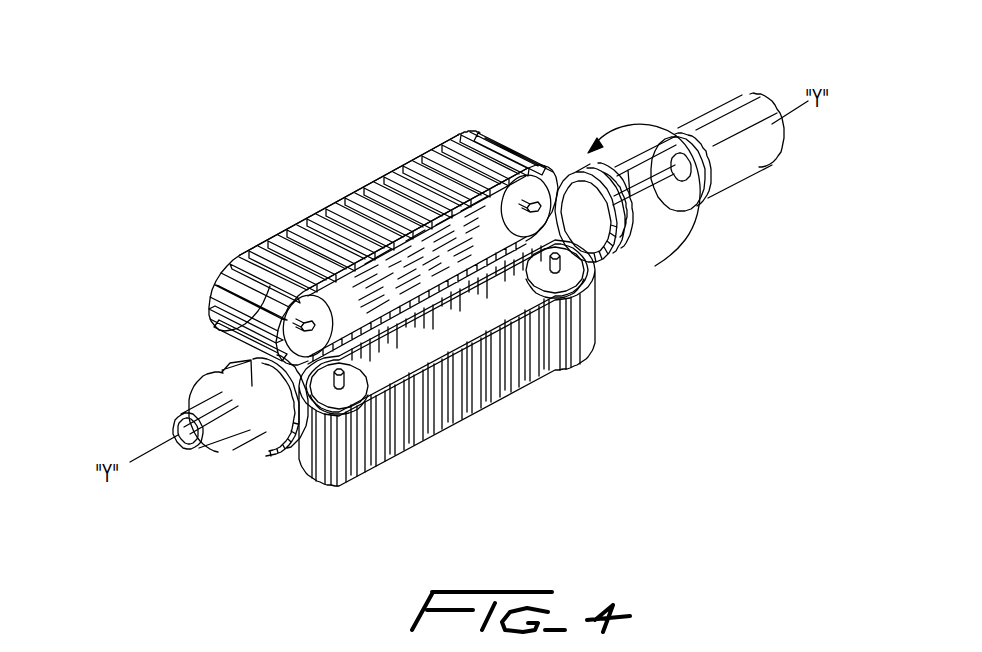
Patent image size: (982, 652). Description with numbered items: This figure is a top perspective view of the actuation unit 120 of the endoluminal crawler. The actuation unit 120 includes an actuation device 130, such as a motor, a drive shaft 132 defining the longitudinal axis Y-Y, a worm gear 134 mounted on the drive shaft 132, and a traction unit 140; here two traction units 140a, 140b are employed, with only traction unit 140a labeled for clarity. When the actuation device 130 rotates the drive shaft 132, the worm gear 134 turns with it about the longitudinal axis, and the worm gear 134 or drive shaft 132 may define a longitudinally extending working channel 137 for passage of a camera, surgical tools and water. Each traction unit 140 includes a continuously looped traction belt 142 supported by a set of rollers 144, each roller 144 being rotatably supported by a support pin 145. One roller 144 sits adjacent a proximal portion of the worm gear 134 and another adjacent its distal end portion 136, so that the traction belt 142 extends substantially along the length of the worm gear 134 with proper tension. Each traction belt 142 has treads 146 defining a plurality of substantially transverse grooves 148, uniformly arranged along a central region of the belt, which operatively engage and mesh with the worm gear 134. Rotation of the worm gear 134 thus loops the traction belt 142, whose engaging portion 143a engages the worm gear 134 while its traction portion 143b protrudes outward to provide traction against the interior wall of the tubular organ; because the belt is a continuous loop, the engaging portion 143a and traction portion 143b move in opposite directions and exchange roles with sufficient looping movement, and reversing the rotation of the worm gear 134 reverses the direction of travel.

The actuation unit 120 is at (627, 73).
The actuation device 130 is at (738, 178).
The drive shaft 132 is at (682, 240).
The worm gear 134 is at (618, 268).
The distal end portion 136 is at (244, 456).
The working channel 137 is at (184, 448).
The traction unit 140 is at (407, 457).
The traction unit 140a is at (207, 286).
The traction unit 140b is at (452, 421).
The traction belt 142 is at (430, 154).
The engaging portion 143a is at (377, 287).
The traction portion 143b is at (373, 283).
The roller 144 is at (543, 180).
The support pin 145 is at (252, 256).
The treads 146 is at (473, 165).
The transverse grooves 148 is at (383, 220).